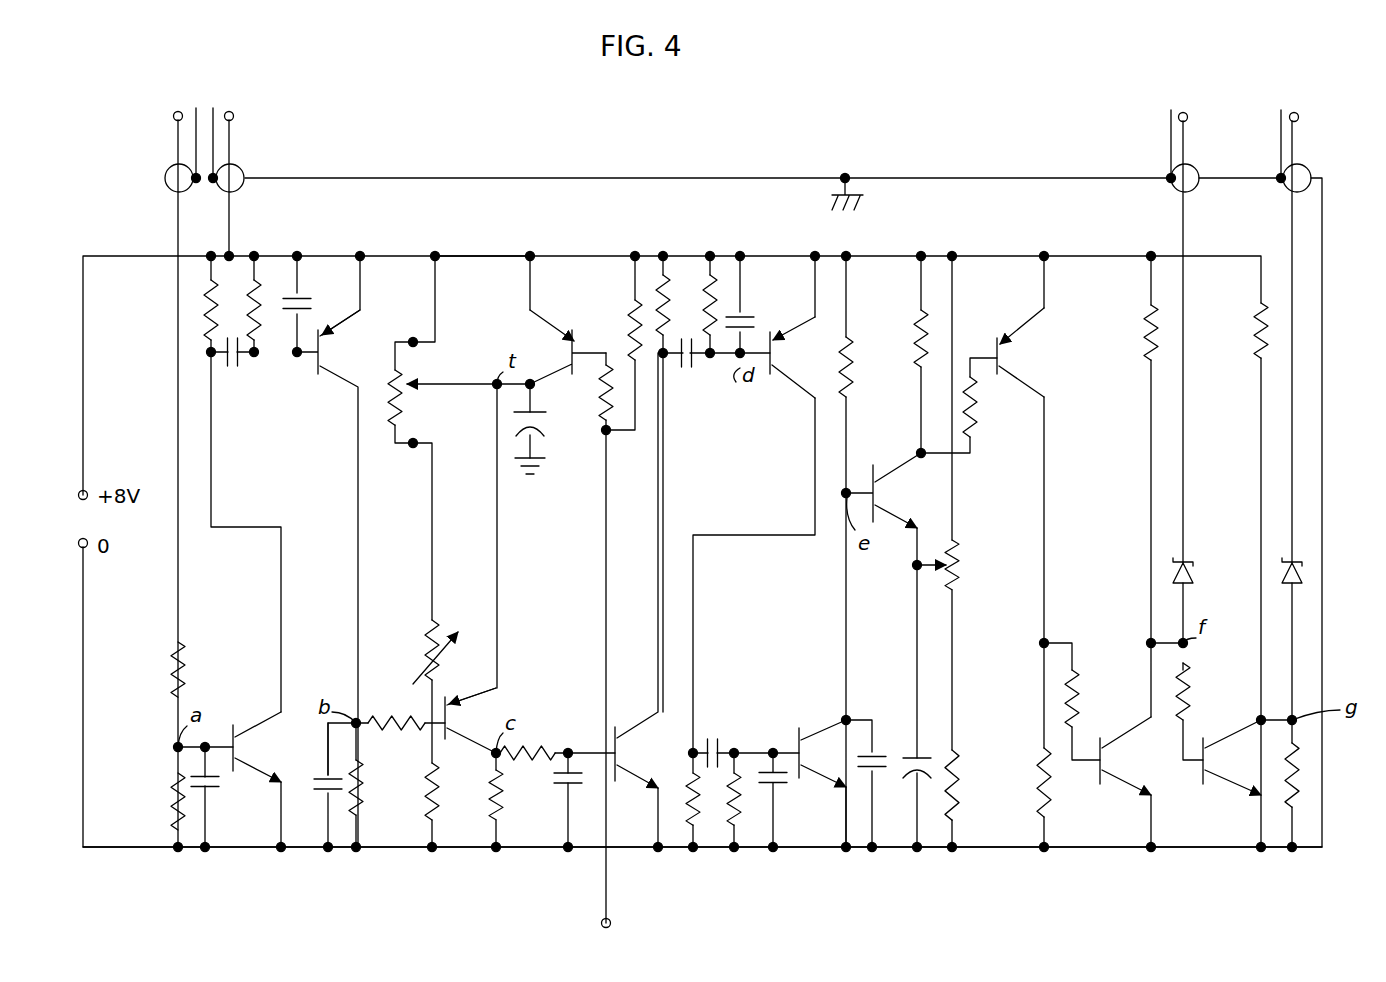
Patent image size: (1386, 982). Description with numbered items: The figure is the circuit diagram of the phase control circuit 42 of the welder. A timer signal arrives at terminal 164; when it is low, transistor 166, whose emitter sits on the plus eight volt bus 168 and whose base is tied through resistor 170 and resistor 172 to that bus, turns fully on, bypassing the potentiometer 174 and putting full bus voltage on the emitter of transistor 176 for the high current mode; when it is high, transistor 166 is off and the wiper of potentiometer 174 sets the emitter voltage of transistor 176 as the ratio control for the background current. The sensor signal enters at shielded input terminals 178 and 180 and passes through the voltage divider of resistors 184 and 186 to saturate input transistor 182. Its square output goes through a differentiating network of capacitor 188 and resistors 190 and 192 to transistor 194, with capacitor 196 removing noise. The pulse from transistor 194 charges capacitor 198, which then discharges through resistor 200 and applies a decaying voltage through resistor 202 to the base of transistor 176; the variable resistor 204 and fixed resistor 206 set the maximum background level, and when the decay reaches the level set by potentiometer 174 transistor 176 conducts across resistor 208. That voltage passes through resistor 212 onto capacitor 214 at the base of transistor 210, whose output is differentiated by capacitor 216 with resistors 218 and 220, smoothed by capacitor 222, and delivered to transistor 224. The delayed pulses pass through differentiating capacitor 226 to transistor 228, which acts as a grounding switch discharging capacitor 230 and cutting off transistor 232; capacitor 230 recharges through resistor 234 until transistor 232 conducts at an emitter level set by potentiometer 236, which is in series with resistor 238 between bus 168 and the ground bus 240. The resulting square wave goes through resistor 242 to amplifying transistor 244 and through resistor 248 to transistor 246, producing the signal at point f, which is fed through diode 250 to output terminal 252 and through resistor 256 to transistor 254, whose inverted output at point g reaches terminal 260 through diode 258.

The phase control circuit 42 is at (688, 161).
The terminal 164 is at (610, 924).
The transistor 166 is at (584, 340).
The plus 8 volt bus 168 is at (466, 256).
The resistor 170 is at (608, 418).
The resistor 172 is at (635, 306).
The potentiometer 174 is at (408, 378).
The transistor 176 is at (456, 706).
The input terminal 178 is at (178, 116).
The input terminal 180 is at (231, 113).
The input transistor 182 is at (228, 727).
The resistor 184 is at (174, 670).
The resistor 186 is at (174, 802).
The capacitor 188 is at (232, 364).
The resistor 190 is at (208, 289).
The resistor 192 is at (262, 300).
The transistor 194 is at (318, 366).
The capacitor 196 is at (308, 308).
The capacitor 198 is at (300, 776).
The resistor 200 is at (358, 786).
The resistor 202 is at (390, 719).
The variable resistor 204 is at (437, 628).
The fixed resistor 206 is at (438, 818).
The resistor 208 is at (504, 828).
The transistor 210 is at (620, 742).
The resistor 212 is at (543, 750).
The capacitor 214 is at (562, 786).
The capacitor 216 is at (687, 368).
The resistor 218 is at (668, 298).
The resistor 220 is at (714, 304).
The capacitor 222 is at (752, 314).
The transistor 224 is at (774, 378).
The differentiating capacitor 226 is at (716, 742).
The transistor 228 is at (790, 736).
The capacitor 230 is at (878, 726).
The transistor 232 is at (862, 468).
The resistor 234 is at (852, 348).
The potentiometer 236 is at (960, 558).
The resistor 238 is at (957, 760).
The ground bus 240 is at (984, 850).
The resistor 242 is at (973, 416).
The amplifying transistor 244 is at (1020, 354).
The transistor 246 is at (1096, 778).
The resistor 248 is at (1075, 691).
The diode 250 is at (1186, 572).
The output terminal 252 is at (1184, 114).
The transistor 254 is at (1212, 786).
The resistor 256 is at (1186, 700).
The diode 258 is at (1302, 570).
The terminal 260 is at (1296, 112).